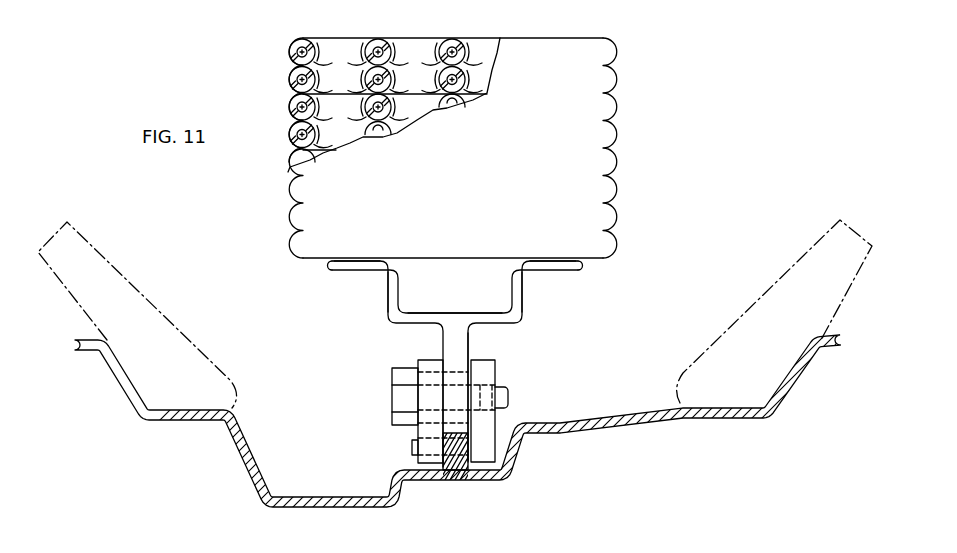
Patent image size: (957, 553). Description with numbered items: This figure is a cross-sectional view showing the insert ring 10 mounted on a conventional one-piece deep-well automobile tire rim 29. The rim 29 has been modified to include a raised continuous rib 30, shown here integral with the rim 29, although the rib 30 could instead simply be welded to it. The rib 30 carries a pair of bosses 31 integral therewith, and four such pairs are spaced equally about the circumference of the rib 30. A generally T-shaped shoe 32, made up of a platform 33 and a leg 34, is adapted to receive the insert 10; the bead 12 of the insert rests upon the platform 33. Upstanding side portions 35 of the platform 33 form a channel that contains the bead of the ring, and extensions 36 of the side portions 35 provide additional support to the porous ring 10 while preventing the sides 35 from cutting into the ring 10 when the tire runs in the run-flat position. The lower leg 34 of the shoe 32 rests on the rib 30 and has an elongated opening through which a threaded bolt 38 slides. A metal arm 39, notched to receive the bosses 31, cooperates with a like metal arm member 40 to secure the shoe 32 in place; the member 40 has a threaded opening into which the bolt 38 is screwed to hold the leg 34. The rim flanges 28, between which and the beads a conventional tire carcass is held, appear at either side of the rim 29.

The insert ring 10 is at (630, 95).
The bead 12 is at (256, 22).
The flanges 28 is at (740, 362).
The one-piece deep-well automobile tire rim 29 is at (252, 477).
The raised continuous rib 30 is at (458, 453).
The bosses 31 is at (412, 447).
The T-shaped shoe 32 is at (383, 318).
The platform 33 is at (422, 313).
The leg 34 is at (464, 343).
The upstanding side portions 35 is at (522, 297).
The extensions 36 is at (565, 272).
The threaded bolt 38 is at (393, 398).
The metal arm 39 is at (430, 363).
The metal arm member 40 is at (488, 428).